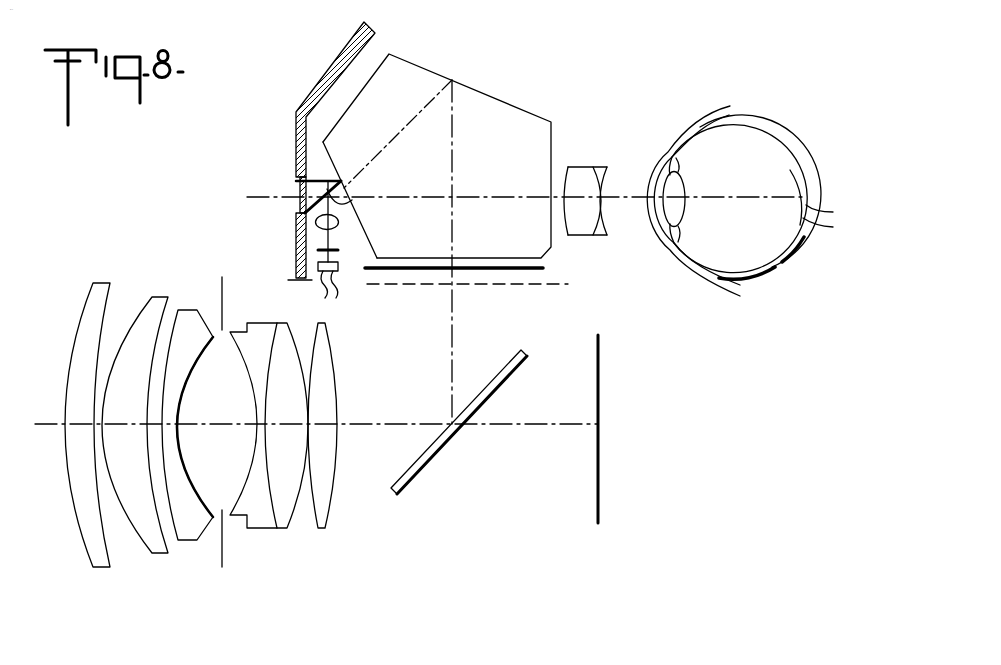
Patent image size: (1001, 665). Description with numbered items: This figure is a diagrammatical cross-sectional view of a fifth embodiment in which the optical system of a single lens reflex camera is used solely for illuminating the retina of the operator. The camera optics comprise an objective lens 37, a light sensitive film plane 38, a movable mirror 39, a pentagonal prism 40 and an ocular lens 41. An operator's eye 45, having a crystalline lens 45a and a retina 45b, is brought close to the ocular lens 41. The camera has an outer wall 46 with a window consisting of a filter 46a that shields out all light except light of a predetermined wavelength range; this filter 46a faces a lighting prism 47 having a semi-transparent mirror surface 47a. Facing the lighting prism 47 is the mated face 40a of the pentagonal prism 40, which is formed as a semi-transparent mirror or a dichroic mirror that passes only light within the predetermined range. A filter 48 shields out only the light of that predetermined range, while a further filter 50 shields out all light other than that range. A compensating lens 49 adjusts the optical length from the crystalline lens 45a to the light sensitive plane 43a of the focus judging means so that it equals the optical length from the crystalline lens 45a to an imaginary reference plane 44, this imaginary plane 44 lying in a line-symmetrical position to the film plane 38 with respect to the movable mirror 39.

The objective lens 37 is at (83, 582).
The light sensitive film plane 38 is at (598, 382).
The movable mirror 39 is at (505, 380).
The pentagonal prism 40 is at (485, 97).
The mated face of the pentagonal prism 40a is at (358, 166).
The ocular lens 41 is at (580, 167).
The light sensitive plane 43a is at (340, 263).
The imaginary plane 44 is at (508, 285).
The operator's eye 45 is at (750, 140).
The crystalline lens 45a is at (685, 212).
The retina 45b is at (788, 188).
The outer wall 46 is at (343, 52).
The filter 46a is at (296, 186).
The lighting prism 47 is at (316, 178).
The semi-transparent mirror surface 47a is at (352, 196).
The filter 48 is at (500, 266).
The compensating lens 49 is at (339, 222).
The filter 50 is at (318, 250).